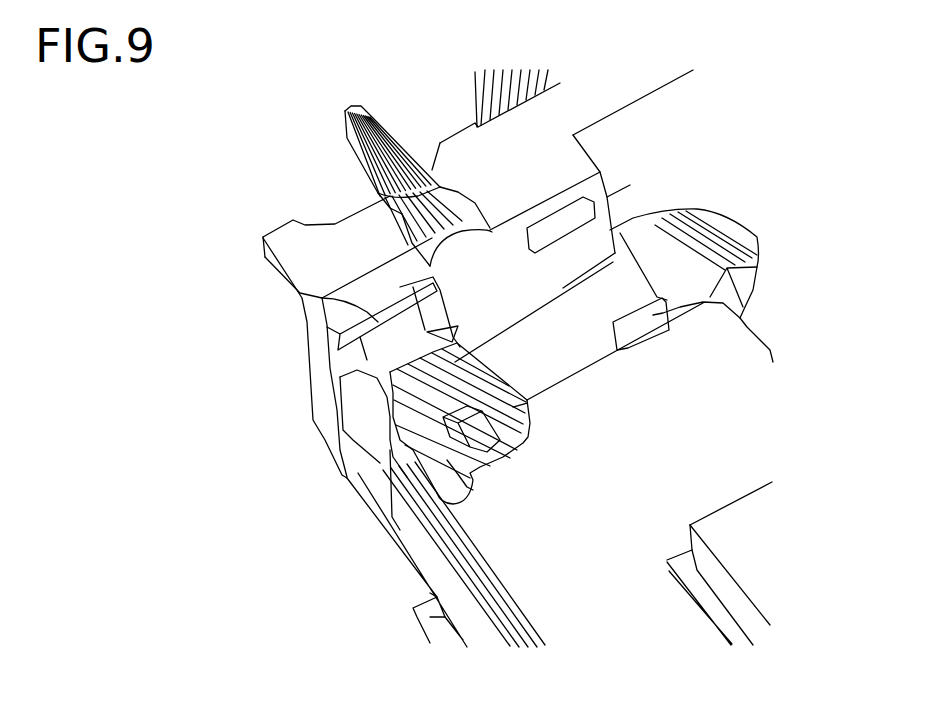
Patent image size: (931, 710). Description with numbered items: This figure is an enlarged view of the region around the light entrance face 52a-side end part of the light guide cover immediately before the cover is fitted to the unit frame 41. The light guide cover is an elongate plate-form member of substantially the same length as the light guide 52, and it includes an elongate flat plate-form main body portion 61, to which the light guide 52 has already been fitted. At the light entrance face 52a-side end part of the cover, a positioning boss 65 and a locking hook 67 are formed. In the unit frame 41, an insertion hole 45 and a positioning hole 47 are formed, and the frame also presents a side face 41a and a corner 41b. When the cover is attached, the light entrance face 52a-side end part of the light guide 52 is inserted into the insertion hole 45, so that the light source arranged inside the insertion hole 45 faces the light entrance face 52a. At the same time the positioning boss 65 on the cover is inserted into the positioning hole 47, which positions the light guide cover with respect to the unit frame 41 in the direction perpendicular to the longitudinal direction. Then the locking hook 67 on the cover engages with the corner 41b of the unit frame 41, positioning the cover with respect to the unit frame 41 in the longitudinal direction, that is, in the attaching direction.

The unit frame 41 is at (318, 227).
The housing side face 41a is at (605, 300).
The corner 41b is at (307, 363).
The insertion hole 45 is at (322, 298).
The positioning hole 47 is at (592, 207).
The light guide 52 is at (432, 390).
The light entrance face 52a is at (453, 322).
The main body portion 61 is at (520, 567).
The positioning boss 65 is at (655, 313).
The locking hook 67 is at (352, 410).